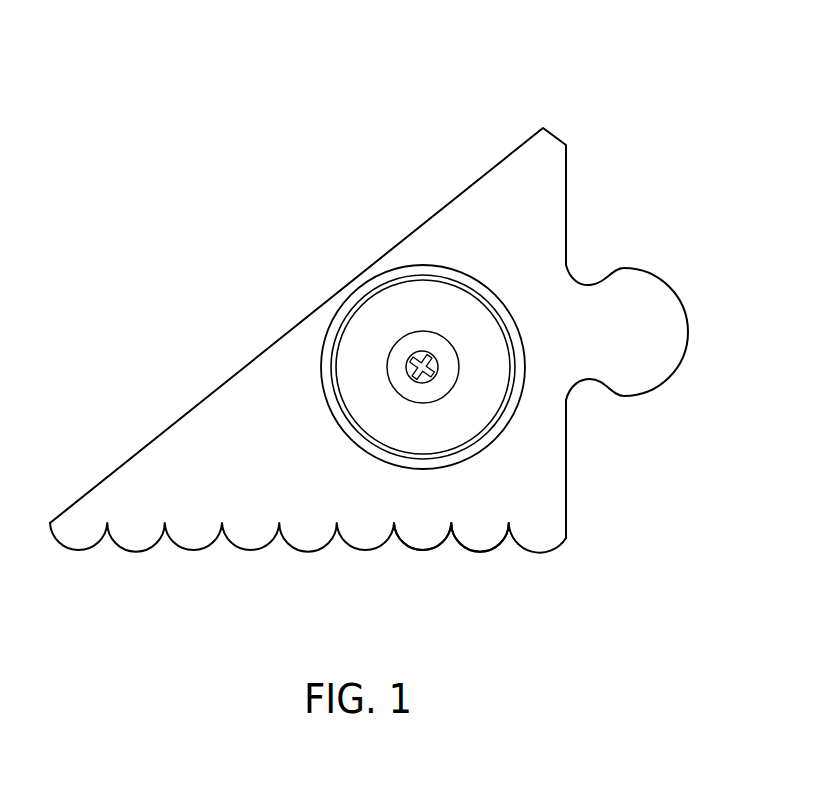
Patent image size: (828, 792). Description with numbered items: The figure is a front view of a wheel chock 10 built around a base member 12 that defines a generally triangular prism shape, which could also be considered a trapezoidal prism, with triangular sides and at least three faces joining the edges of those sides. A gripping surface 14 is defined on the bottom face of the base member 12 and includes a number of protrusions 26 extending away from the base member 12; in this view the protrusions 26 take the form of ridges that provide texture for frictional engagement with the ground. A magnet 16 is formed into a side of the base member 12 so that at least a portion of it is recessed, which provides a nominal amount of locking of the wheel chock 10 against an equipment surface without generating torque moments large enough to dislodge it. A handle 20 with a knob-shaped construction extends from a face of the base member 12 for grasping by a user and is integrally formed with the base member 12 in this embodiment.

The wheel chock 10 is at (588, 64).
The base member 12 is at (566, 178).
The gripping surface 14 is at (188, 552).
The magnet 16 is at (383, 308).
The handle 20 is at (637, 397).
The protrusions 26 is at (422, 552).